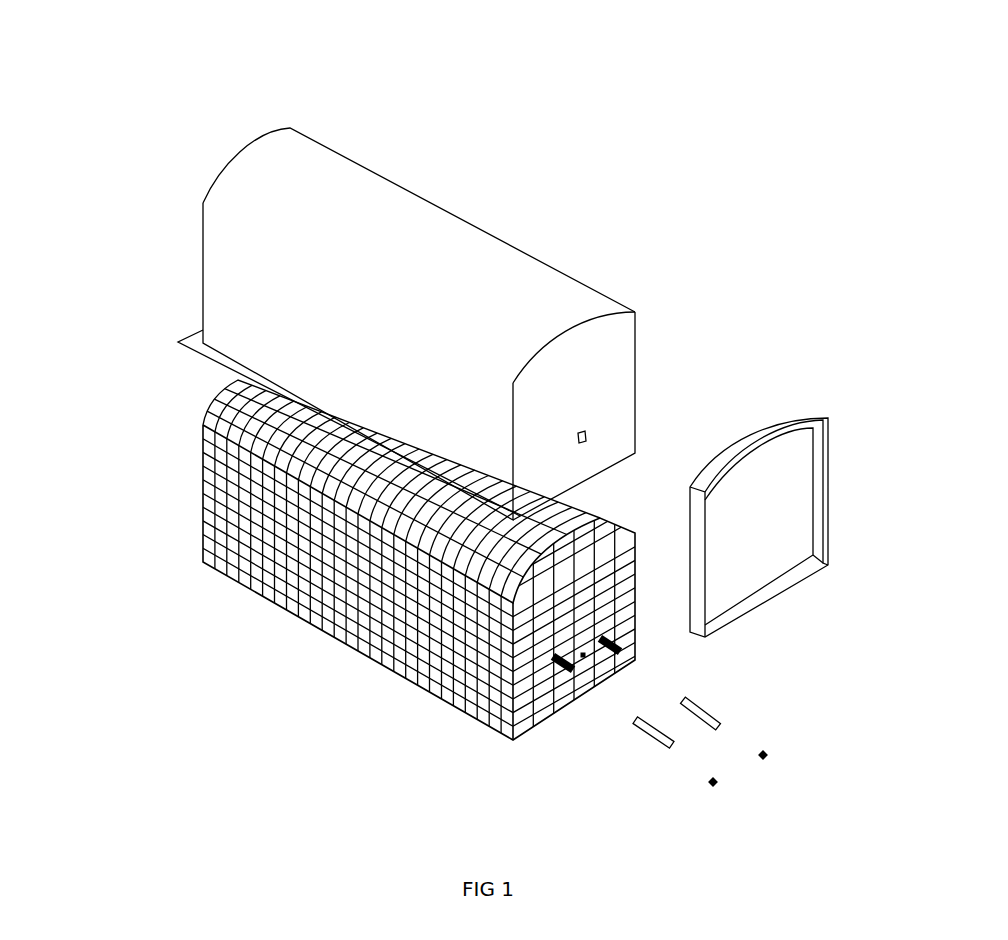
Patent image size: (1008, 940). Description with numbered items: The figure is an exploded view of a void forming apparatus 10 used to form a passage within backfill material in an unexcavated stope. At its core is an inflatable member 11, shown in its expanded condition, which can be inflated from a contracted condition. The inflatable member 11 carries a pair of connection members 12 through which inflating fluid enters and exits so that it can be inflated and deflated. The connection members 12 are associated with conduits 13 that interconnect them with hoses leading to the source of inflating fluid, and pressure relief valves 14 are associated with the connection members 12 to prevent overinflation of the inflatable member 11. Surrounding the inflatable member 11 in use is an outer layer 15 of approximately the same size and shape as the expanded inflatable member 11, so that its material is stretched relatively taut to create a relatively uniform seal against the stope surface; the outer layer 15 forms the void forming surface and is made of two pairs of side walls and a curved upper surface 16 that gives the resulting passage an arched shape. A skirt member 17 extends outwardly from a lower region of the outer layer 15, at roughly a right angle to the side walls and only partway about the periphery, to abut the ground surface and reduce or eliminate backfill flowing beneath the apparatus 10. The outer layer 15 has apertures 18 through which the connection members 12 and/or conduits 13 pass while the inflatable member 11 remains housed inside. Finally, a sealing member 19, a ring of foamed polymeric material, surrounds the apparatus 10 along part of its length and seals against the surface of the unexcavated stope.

The void forming apparatus 10 is at (612, 145).
The inflatable member 11 is at (353, 593).
The connection members 12 is at (607, 655).
The conduits 13 is at (650, 715).
The pressure relief valves 14 is at (727, 790).
The outer layer 15 is at (445, 285).
The upper surface 16 is at (318, 188).
The skirt member 17 is at (188, 370).
The apertures 18 is at (583, 418).
The sealing member 19 is at (788, 405).